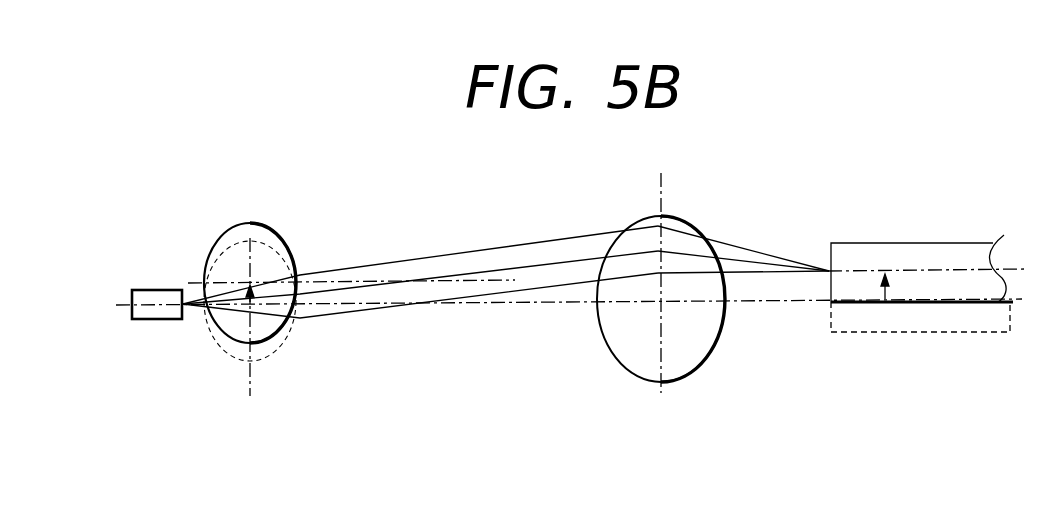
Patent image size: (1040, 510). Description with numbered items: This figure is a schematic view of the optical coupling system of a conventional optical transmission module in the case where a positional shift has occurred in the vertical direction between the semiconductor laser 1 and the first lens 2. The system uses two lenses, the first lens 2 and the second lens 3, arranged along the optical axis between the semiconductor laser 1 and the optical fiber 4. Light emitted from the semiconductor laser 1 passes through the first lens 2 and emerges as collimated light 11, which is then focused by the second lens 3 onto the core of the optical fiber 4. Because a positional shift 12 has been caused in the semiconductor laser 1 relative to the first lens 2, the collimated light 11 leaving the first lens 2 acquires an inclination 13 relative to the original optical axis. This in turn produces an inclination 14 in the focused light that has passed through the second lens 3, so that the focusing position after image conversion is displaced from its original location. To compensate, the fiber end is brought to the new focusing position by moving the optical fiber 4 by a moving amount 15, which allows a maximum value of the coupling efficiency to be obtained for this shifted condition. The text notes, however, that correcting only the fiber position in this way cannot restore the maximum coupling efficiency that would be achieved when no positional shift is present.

The semiconductor laser 1 is at (152, 298).
The first lens 2 is at (267, 277).
The second lens 3 is at (667, 248).
The optical fiber 4 is at (855, 263).
The collimated light 11 is at (343, 282).
The positional shift 12 is at (243, 304).
The inclination 13 is at (497, 268).
The inclination 14 is at (733, 258).
The moving amount 15 is at (890, 288).